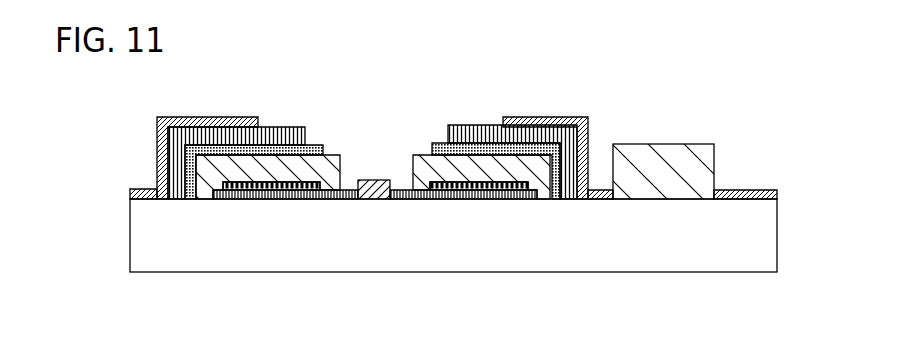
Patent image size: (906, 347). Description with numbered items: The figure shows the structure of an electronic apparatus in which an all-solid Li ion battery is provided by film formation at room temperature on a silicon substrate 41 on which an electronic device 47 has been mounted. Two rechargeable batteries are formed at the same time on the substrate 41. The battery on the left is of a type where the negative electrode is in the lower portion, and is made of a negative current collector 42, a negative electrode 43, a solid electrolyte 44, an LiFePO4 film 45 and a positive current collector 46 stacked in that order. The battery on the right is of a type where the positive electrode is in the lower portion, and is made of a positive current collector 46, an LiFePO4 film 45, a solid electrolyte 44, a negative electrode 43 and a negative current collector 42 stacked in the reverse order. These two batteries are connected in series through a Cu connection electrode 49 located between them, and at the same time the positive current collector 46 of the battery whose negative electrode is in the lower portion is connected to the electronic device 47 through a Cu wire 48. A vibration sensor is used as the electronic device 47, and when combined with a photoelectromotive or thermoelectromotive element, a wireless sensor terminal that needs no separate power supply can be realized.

The substrate 41 is at (766, 255).
The negative current collector 42 is at (233, 133).
The negative electrode 43 is at (287, 143).
The solid electrolyte 44 is at (243, 172).
The LiFePO4 film 45 is at (282, 190).
The positive current collector 46 is at (318, 185).
The electronic device 47 is at (658, 155).
The Cu wire 48 is at (190, 117).
The Cu connection electrode 49 is at (373, 181).